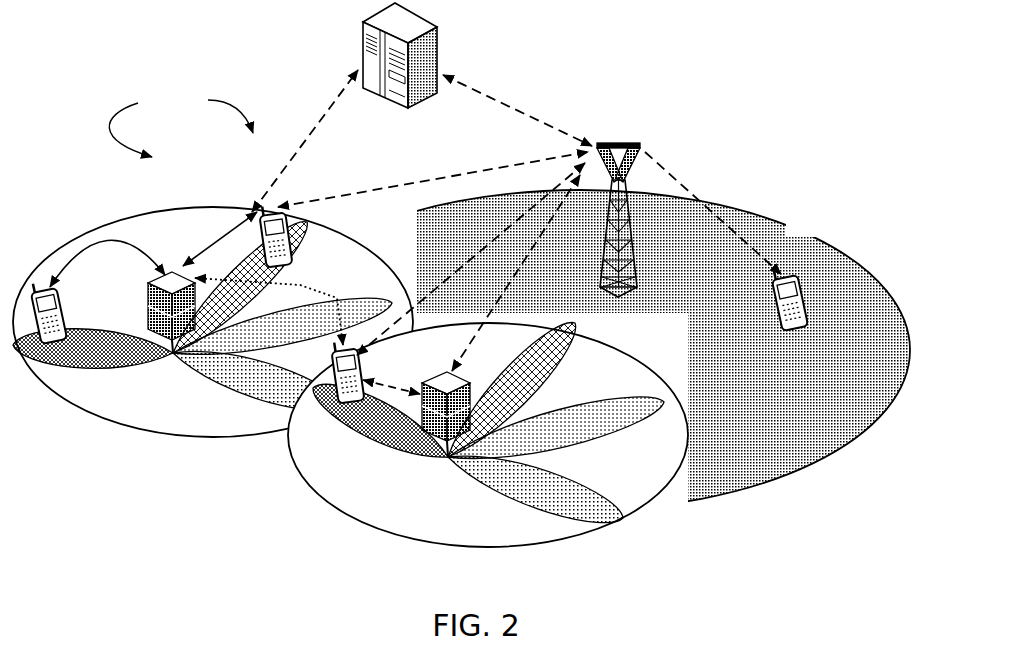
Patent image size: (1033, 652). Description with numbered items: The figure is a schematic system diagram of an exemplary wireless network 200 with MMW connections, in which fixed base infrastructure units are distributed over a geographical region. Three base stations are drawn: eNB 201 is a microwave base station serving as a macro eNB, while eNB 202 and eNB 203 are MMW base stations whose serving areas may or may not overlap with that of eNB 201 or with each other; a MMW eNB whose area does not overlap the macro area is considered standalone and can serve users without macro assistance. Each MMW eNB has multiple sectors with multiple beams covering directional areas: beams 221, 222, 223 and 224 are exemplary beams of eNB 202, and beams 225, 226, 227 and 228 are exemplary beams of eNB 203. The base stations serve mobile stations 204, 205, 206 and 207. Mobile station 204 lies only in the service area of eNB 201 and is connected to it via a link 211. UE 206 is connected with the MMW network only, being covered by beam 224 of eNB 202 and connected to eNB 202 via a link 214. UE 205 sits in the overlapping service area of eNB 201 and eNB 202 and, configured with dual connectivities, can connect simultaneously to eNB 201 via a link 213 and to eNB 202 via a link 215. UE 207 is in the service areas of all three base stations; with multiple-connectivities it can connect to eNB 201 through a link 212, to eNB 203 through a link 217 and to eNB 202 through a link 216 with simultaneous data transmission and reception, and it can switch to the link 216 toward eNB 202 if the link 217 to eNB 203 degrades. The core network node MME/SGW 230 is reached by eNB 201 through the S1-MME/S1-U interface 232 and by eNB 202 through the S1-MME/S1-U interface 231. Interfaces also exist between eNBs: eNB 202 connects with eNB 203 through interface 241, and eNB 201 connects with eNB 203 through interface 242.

The wireless network 200 is at (181, 123).
The eNB 201 is at (628, 147).
The MMW eNB 202 is at (168, 273).
The MMW eNB 203 is at (450, 372).
The mobile station 204 is at (782, 272).
The UE 205 is at (288, 217).
The UE 206 is at (62, 296).
The UE 207 is at (346, 410).
The link 211 is at (713, 213).
The link 212 is at (471, 259).
The link 213 is at (433, 179).
The link 214 is at (107, 259).
The link 215 is at (220, 239).
The link 216 is at (269, 311).
The link 217 is at (377, 356).
The beam 221 is at (230, 376).
The beam 222 is at (393, 305).
The beam 223 is at (288, 254).
The beam 224 is at (92, 368).
The beam 225 is at (565, 512).
The beam 226 is at (605, 428).
The beam 227 is at (565, 333).
The beam 228 is at (405, 435).
The MME/SGW core network node 230 is at (400, 85).
The S1-MME/S1-U interface 231 is at (292, 141).
The S1-MME/S1-U interface 232 is at (517, 110).
The interface 241 is at (248, 340).
The interface 242 is at (516, 273).